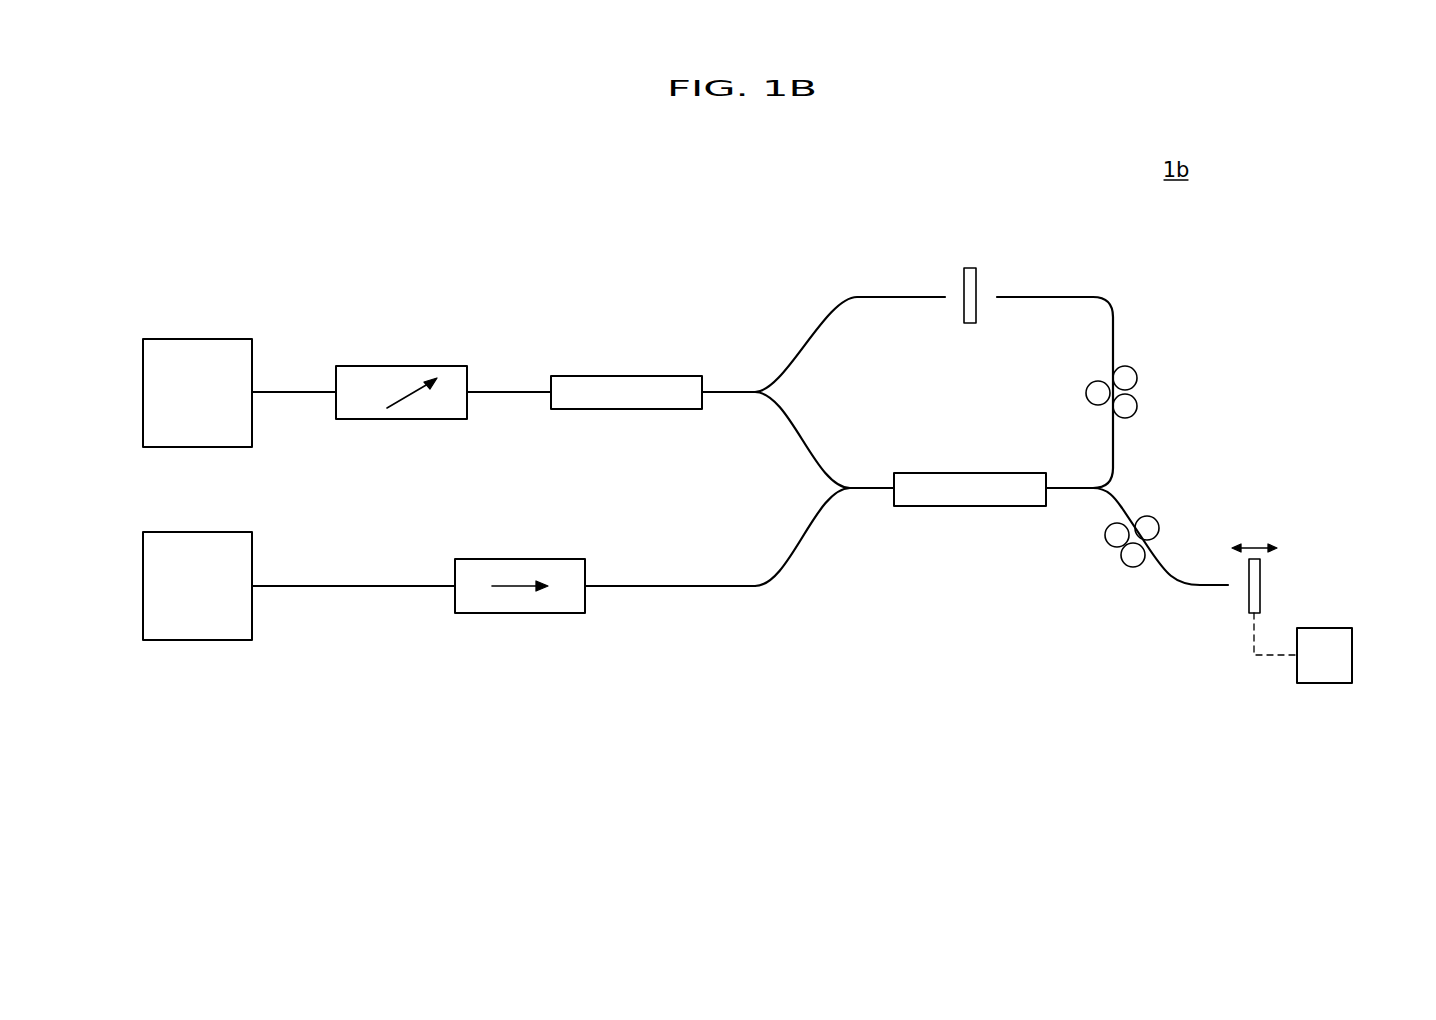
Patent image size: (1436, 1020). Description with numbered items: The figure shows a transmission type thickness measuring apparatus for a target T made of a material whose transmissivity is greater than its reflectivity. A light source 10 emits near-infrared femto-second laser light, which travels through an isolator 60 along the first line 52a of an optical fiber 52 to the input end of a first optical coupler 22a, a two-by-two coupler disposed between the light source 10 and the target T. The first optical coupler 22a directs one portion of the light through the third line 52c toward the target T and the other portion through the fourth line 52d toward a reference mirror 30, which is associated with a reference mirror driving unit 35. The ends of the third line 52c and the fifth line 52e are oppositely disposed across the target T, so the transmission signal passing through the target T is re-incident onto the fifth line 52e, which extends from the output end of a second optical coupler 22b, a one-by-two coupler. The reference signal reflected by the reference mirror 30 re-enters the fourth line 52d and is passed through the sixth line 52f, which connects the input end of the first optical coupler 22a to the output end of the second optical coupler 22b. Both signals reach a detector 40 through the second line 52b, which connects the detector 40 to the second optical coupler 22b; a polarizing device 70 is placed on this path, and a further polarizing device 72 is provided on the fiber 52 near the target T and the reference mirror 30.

The light source 10 is at (214, 532).
The detector 40 is at (214, 339).
The polarizing device 70 is at (430, 366).
The isolator 60 is at (545, 559).
The first optical coupler 22a is at (1008, 473).
The second optical coupler 22b is at (664, 376).
The optical fiber 52 is at (740, 459).
The first line 52a is at (353, 586).
The second line 52b is at (298, 392).
The third line 52c is at (1115, 341).
The fourth line 52d is at (1153, 566).
The fifth line 52e is at (885, 296).
The sixth line 52f is at (808, 437).
The polarizing device 72 is at (1138, 378).
The target T is at (969, 268).
The reference mirror 30 is at (1262, 583).
The reference mirror driving unit 35 is at (1353, 655).